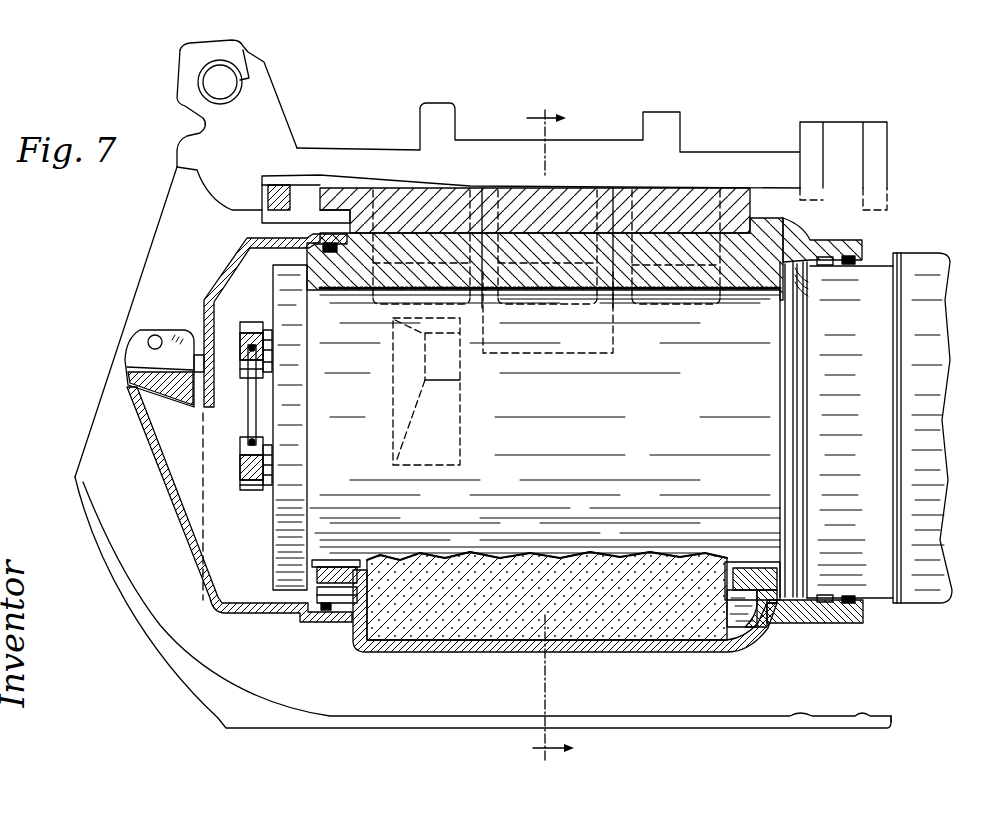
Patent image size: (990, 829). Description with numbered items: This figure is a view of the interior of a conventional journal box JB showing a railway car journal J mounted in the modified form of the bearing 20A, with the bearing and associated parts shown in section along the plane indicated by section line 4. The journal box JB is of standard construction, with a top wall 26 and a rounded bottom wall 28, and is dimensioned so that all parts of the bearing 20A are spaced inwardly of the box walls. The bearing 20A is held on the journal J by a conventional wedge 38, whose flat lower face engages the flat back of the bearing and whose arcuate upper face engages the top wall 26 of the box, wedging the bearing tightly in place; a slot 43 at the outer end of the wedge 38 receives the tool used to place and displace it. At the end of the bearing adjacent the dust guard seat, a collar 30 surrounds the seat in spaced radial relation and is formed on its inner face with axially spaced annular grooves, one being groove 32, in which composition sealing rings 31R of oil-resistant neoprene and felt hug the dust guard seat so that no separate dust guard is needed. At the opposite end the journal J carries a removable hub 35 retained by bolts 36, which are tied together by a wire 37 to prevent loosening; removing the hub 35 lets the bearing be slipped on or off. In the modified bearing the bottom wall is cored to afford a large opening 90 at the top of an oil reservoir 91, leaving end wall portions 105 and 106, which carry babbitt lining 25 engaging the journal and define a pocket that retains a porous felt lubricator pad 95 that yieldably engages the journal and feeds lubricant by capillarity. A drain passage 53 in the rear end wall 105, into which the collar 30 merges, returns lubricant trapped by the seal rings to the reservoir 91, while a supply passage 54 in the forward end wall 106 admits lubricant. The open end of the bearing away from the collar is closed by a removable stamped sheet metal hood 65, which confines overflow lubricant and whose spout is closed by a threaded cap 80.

The journal box JB is at (364, 140).
The section line 4- 4 is at (549, 435).
The top wall 26 is at (576, 150).
The wedge 38 is at (568, 203).
The opening or slot 43 is at (295, 212).
The collar 30 is at (827, 240).
The annular groove 32 is at (830, 266).
The sealing ring 31R is at (850, 266).
The journal J is at (935, 334).
The hood 65 is at (212, 272).
The cap 80 is at (134, 343).
The wire 37 is at (252, 396).
The bolts 36 is at (241, 468).
The hub 35 is at (277, 514).
The end wall portion 106 is at (333, 562).
The Babbitt metal lining 25 is at (348, 562).
The oil passage 54 is at (292, 592).
The porous pad 95 is at (545, 592).
The opening 90 is at (396, 560).
The oil reservoir 91 is at (486, 634).
The end wall portion 105 is at (755, 570).
The oil passage 53 is at (767, 604).
The bearing 20A is at (828, 631).
The bottom wall 28 is at (407, 719).